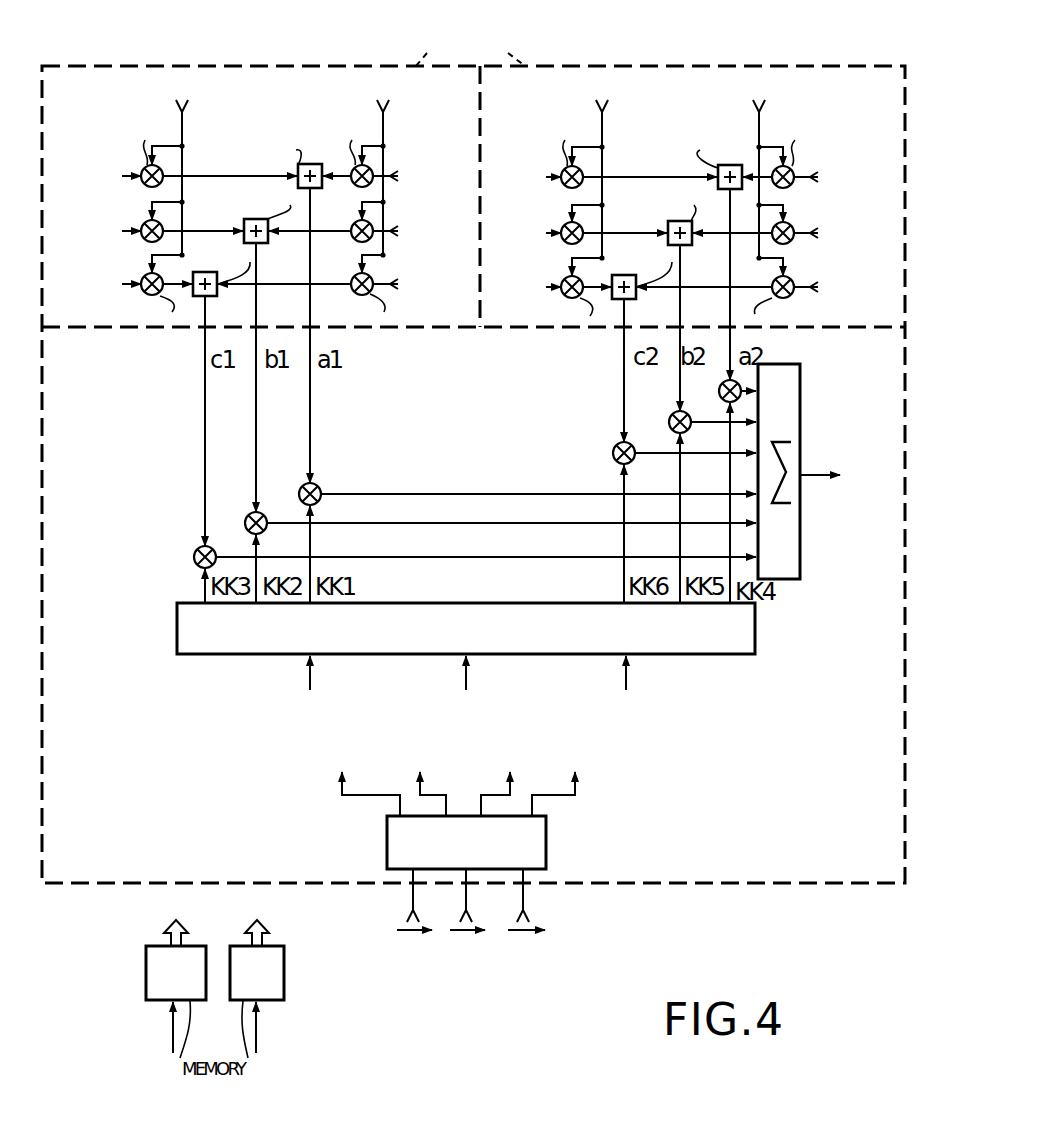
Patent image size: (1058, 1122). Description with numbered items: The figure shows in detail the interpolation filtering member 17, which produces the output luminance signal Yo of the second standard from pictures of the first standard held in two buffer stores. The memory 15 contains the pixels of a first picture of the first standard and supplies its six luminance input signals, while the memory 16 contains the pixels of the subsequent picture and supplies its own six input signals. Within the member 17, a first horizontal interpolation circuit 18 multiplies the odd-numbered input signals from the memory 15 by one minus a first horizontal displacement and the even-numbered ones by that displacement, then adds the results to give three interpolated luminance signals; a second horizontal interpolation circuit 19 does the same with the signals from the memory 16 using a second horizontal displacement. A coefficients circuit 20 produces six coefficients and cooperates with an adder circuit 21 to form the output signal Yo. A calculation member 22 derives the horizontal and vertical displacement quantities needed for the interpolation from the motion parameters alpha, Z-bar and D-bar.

The buffer store 15 is at (146, 972).
The buffer store 16 is at (284, 990).
The interpolation filtering member 17 is at (762, 878).
The horizontal interpolation circuit 18 is at (308, 100).
The horizontal interpolation circuit 19 is at (713, 100).
The coefficients circuit 20 is at (755, 633).
The adder circuit 21 is at (800, 563).
The calculation member 22 is at (546, 846).